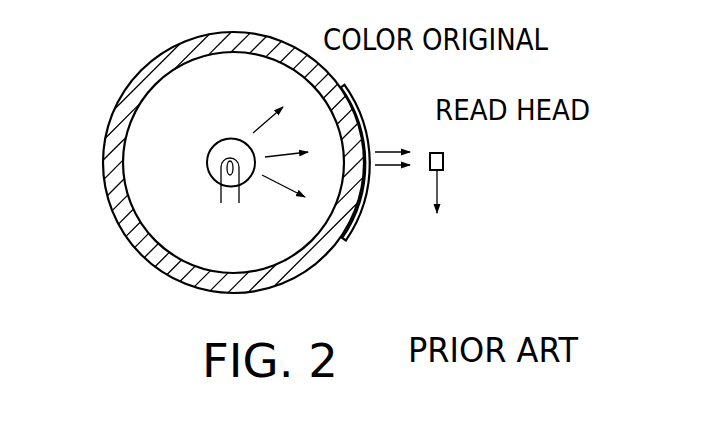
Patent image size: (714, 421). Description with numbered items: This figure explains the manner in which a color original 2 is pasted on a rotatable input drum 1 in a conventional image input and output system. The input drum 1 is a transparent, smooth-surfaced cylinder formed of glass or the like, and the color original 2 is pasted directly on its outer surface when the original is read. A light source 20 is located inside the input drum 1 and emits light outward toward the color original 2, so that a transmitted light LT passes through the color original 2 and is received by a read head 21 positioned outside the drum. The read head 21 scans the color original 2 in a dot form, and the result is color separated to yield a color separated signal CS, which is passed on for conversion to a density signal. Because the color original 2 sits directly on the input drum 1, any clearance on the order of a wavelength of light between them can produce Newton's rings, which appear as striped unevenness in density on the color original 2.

The input drum 1 is at (123, 96).
The color original 2 is at (349, 109).
The light source 20 is at (219, 139).
The read head 21 is at (445, 158).
The transmitted light LT is at (392, 175).
The color separated signal CS is at (457, 197).